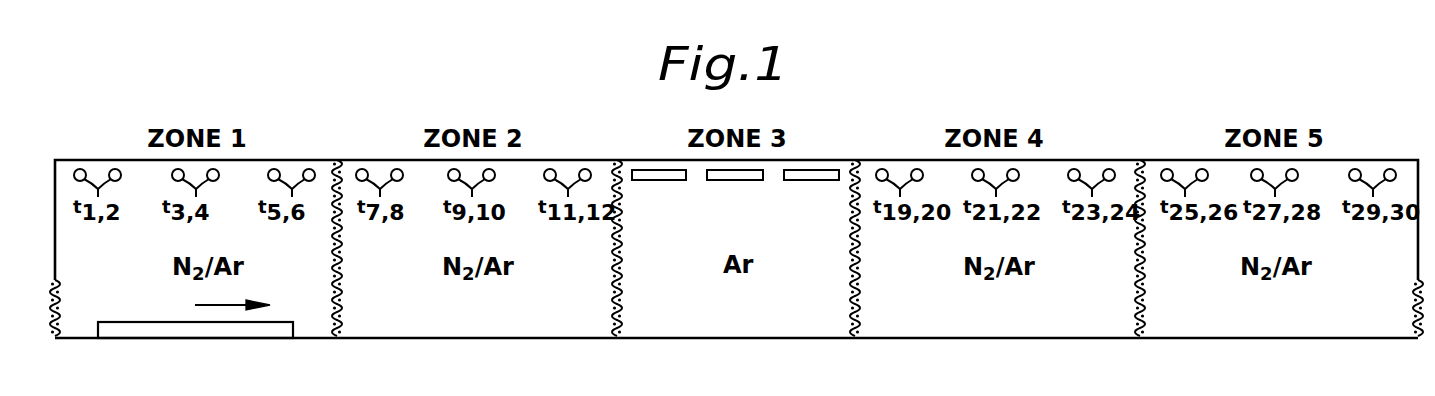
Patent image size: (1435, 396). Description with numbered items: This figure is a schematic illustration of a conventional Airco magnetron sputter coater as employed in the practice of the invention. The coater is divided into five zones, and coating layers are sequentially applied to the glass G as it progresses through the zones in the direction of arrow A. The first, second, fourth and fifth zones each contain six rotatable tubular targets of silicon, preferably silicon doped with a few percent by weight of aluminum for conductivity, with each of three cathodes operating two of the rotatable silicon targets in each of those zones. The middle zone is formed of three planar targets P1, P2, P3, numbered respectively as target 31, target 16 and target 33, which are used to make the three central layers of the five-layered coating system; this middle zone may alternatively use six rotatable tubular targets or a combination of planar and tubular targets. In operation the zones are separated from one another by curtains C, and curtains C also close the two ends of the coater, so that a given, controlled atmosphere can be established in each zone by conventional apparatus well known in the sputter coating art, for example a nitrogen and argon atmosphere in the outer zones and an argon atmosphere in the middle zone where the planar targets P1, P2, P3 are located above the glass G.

The planar target 31 is at (666, 209).
The planar target 16 is at (739, 209).
The planar target 33 is at (813, 209).
The curtain C is at (58, 295).
The glass G is at (230, 332).
The arrow A is at (219, 304).
The planar target P1 is at (673, 181).
The planar target P2 is at (750, 181).
The planar target P3 is at (823, 181).